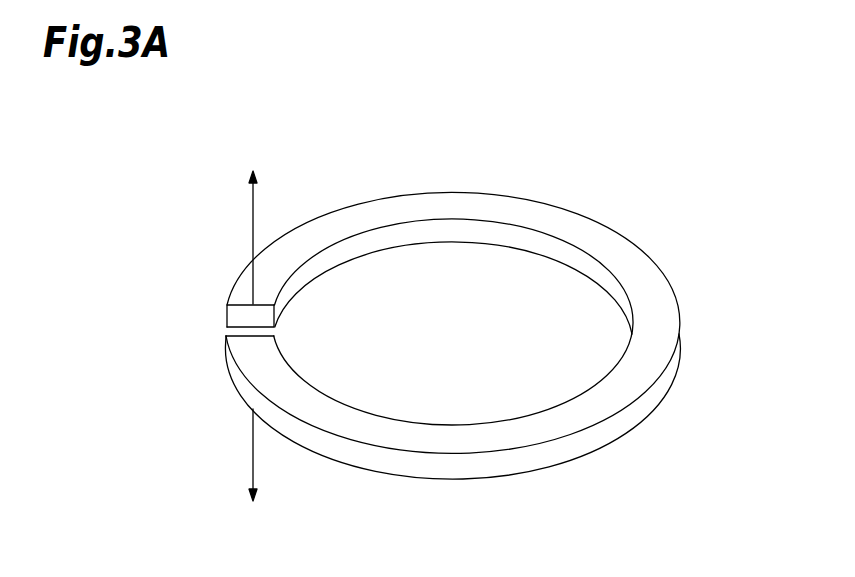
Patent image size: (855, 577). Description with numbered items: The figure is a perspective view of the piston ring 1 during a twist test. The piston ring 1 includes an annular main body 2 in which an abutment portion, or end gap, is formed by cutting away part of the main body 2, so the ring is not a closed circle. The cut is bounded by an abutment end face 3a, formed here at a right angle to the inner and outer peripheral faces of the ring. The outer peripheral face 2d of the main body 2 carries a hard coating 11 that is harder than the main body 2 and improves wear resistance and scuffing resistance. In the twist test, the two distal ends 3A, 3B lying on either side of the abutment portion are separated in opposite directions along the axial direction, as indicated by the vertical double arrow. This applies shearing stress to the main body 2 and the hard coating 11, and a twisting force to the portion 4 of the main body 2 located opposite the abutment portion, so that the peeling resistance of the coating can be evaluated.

The piston ring 1 is at (678, 165).
The main body 2 is at (546, 213).
The portion of the main body opposite to the abutment portion 4 is at (663, 316).
The outer peripheral face 2d is at (452, 438).
The hard coating 11 is at (538, 457).
The distal end 3A is at (240, 292).
The abutment end face 3a is at (233, 315).
The distal end 3B is at (237, 346).